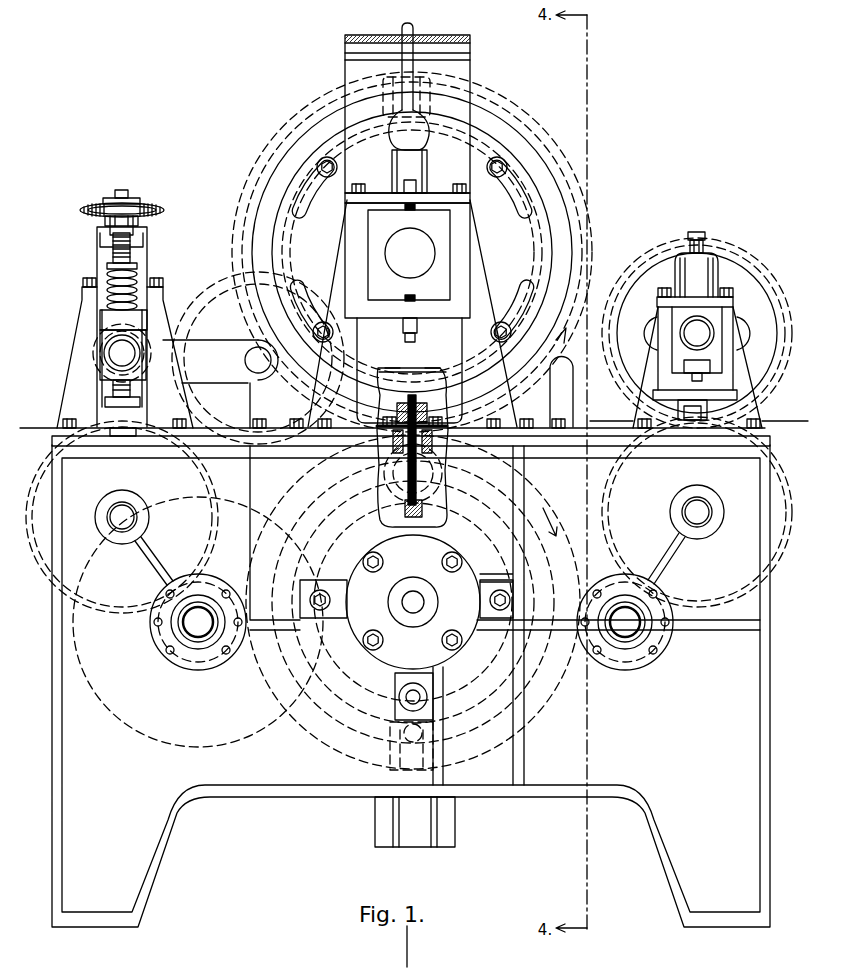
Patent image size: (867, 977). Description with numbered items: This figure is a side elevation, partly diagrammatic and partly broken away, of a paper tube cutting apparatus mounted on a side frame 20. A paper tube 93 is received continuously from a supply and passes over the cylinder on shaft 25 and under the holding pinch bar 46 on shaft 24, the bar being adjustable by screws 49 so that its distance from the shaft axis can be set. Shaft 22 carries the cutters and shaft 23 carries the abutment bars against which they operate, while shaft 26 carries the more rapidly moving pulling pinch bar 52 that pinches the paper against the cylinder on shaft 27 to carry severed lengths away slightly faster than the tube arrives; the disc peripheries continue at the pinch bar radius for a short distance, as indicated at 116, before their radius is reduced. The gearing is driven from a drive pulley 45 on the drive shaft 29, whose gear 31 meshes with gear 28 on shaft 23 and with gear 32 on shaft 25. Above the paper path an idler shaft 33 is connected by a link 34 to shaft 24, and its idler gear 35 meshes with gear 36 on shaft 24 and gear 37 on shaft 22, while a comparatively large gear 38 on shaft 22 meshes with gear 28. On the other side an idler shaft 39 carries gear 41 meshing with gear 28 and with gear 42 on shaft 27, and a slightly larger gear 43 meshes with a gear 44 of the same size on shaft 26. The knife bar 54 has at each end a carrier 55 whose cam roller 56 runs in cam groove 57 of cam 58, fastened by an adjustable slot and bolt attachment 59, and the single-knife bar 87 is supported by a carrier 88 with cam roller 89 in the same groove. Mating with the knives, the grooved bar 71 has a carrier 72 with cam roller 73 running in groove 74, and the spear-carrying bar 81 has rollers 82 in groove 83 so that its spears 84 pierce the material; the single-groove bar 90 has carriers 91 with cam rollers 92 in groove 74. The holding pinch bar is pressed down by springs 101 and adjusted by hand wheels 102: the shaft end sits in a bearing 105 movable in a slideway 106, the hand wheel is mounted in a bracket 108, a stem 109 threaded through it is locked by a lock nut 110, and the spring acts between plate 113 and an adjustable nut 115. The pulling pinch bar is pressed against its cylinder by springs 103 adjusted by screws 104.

The side frame 20 is at (600, 788).
The shaft 22 is at (415, 240).
The shaft 23 is at (425, 602).
The shaft 24 is at (115, 352).
The shaft 25 is at (122, 527).
The shaft 26 is at (705, 333).
The shaft 27 is at (708, 512).
The gear 28 is at (547, 710).
The drive shaft 29 is at (200, 630).
The gear 31 is at (215, 575).
The gear 32 is at (202, 470).
The idler shaft 33 is at (248, 360).
The link 34 is at (210, 342).
The idler gear 35 is at (215, 278).
The gear 36 is at (168, 317).
The gear 37 is at (310, 255).
The gear 38 is at (248, 180).
The idler shaft 39 is at (628, 630).
The gear 41 is at (668, 637).
The gear 42 is at (618, 513).
The gear 43 is at (620, 476).
The gear 44 is at (617, 367).
The drive pulley 45 is at (123, 728).
The holding pinch bar 46 is at (120, 431).
The screw 49 is at (125, 393).
The pulling pinch bar 52 is at (692, 405).
The bar 54 is at (437, 397).
The carrier 55 is at (430, 375).
The cam roller 56 is at (388, 373).
The cam groove 57 is at (447, 130).
The cam 58 is at (543, 185).
The slot and bolt attachment 59 is at (327, 167).
The grooved bar 71 is at (378, 445).
The carrier 72 is at (377, 478).
The cam roller 73 is at (405, 473).
The groove 74 is at (465, 477).
The spear-carrying bar 81 is at (416, 485).
The roller 82 is at (413, 527).
The groove 83 is at (366, 523).
The spear 84 is at (418, 465).
The bar 87 is at (400, 88).
The carrier 88 is at (430, 97).
The cam roller 89 is at (398, 127).
The bar 90 is at (398, 752).
The carrier 91 is at (432, 745).
The cam roller 92 is at (403, 732).
The paper tube 93 is at (30, 428).
The spring 101 is at (135, 290).
The hand wheel 102 is at (163, 210).
The spring 103 is at (700, 303).
The screw 104 is at (702, 233).
The bearing 105 is at (103, 335).
The slideway 106 is at (112, 318).
The bracket 108 is at (98, 240).
The stem 109 is at (118, 250).
The lock nut 110 is at (117, 197).
The plate 113 is at (113, 317).
The nut 115 is at (108, 272).
The disc periphery extension 116 is at (650, 407).